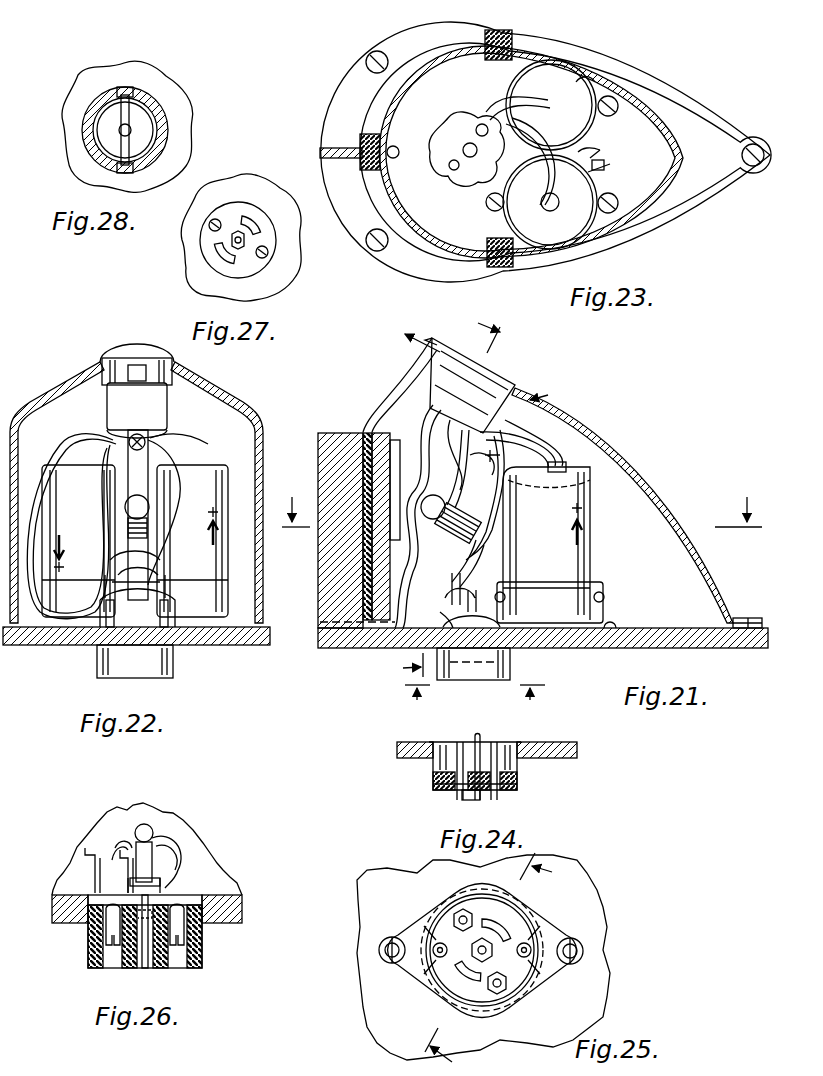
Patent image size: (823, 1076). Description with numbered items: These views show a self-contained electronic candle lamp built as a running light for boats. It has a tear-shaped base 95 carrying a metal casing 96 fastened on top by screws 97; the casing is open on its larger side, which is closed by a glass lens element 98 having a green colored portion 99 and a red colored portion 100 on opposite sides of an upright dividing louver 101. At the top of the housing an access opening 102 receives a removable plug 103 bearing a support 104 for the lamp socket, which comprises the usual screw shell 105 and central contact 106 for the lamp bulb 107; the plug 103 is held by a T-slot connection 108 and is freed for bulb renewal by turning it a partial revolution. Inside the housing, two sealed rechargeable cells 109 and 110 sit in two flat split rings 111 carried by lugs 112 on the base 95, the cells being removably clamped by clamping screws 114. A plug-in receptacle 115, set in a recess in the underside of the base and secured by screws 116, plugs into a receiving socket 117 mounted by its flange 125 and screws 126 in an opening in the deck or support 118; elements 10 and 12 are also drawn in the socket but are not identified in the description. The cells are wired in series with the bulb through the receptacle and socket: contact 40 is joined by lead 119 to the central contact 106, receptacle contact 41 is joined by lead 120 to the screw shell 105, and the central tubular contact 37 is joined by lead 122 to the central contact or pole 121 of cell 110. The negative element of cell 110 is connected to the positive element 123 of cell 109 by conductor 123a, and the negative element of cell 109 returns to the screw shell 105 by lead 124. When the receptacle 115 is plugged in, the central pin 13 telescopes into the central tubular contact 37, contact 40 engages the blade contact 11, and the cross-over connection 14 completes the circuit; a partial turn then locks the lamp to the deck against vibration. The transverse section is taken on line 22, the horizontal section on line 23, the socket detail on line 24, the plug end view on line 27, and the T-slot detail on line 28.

In FIG. 24, the plug body 10 is at (436, 784).
In FIG. 24, the blade contact 11 is at (456, 756).
In FIG. 25, the blade contact 11 is at (467, 980).
In FIG. 24, the contact pin 12 is at (498, 752).
In FIG. 25, the contact pin 12 is at (504, 925).
In FIG. 24, the central pin 13 is at (479, 746).
In FIG. 25, the central pin 13 is at (487, 954).
In FIG. 24, the cross-over connection 14 is at (462, 796).
In FIG. 21, the section line 22— 22 is at (442, 493).
In FIG. 21, the section line 23— 23 is at (522, 502).
In FIG. 25, the section line 24— 24 is at (498, 964).
In FIG. 21, the section line 27— 27 is at (473, 700).
In FIG. 21, the section line 28— 28 is at (482, 354).
In FIG. 26, the central tubular contact 37 is at (145, 960).
In FIG. 27, the contact 40 is at (222, 257).
In FIG. 26, the contact 40 is at (106, 936).
In FIG. 27, the receptacle contact 41 is at (252, 228).
In FIG. 26, the receptacle contact 41 is at (176, 936).
In FIG. 27, the tear-shaped base 95 is at (276, 281).
In FIG. 22, the tear-shaped base 95 is at (38, 650).
In FIG. 21, the tear-shaped base 95 is at (642, 648).
In FIG. 28, the metal casing 96 is at (182, 132).
In FIG. 22, the metal casing 96 is at (260, 452).
In FIG. 21, the metal casing 96 is at (625, 463).
In FIG. 21, the screws 97 is at (745, 618).
In FIG. 23, the glass lens element 98 is at (384, 202).
In FIG. 23, the green colored portion 99 is at (418, 242).
In FIG. 23, the red colored portion 100 is at (410, 66).
In FIG. 23, the upright dividing louver 101 is at (322, 148).
In FIG. 21, the upright dividing louver 101 is at (320, 574).
In FIG. 21, the access opening 102 is at (498, 372).
In FIG. 28, the removable plug 103 is at (106, 160).
In FIG. 22, the removable plug 103 is at (168, 404).
In FIG. 21, the removable plug 103 is at (445, 392).
In FIG. 22, the support 104 is at (151, 460).
In FIG. 21, the support 104 is at (457, 478).
In FIG. 22, the screw shell 105 is at (150, 526).
In FIG. 21, the screw shell 105 is at (448, 535).
In FIG. 21, the central contact 106 is at (470, 547).
In FIG. 22, the lamp bulb 107 is at (138, 507).
In FIG. 21, the lamp bulb 107 is at (427, 518).
In FIG. 28, the T-slot connection 108 is at (136, 96).
In FIG. 23, the sealed rechargeable cell 109 is at (567, 82).
In FIG. 22, the sealed rechargeable cell 109 is at (88, 527).
In FIG. 23, the sealed rechargeable cell 110 is at (575, 228).
In FIG. 22, the sealed rechargeable cell 110 is at (192, 540).
In FIG. 21, the sealed rechargeable cell 110 is at (582, 552).
In FIG. 23, the flat split rings 111 is at (597, 86).
In FIG. 21, the flat split rings 111 is at (549, 592).
In FIG. 23, the lugs 112 is at (618, 112).
In FIG. 21, the lugs 112 is at (613, 626).
In FIG. 23, the clamping screws 114 is at (610, 160).
In FIG. 22, the plug-in receptacle 115 is at (122, 678).
In FIG. 21, the plug-in receptacle 115 is at (437, 662).
In FIG. 26, the plug-in receptacle 115 is at (88, 956).
In FIG. 27, the screws 116 is at (268, 254).
In FIG. 24, the receiving socket 117 is at (520, 778).
In FIG. 25, the receiving socket 117 is at (436, 1002).
In FIG. 24, the deck or support 118 is at (560, 748).
In FIG. 25, the deck or support 118 is at (598, 973).
In FIG. 22, the lead 119 is at (148, 572).
In FIG. 21, the lead 119 is at (542, 444).
In FIG. 26, the lead 119 is at (104, 834).
In FIG. 21, the lead 120 is at (420, 604).
In FIG. 26, the lead 120 is at (172, 850).
In FIG. 23, the central contact or pole 121 is at (558, 199).
In FIG. 21, the central contact or pole 121 is at (568, 466).
In FIG. 23, the lead 122 is at (520, 178).
In FIG. 22, the lead 122 is at (162, 499).
In FIG. 21, the lead 122 is at (500, 515).
In FIG. 26, the lead 122 is at (154, 824).
In FIG. 22, the positive element 123 is at (190, 448).
In FIG. 22, the conductor 123a is at (176, 646).
In FIG. 23, the lead 124 is at (518, 98).
In FIG. 22, the lead 124 is at (58, 484).
In FIG. 25, the flange 125 is at (556, 922).
In FIG. 25, the screws 126 is at (583, 951).